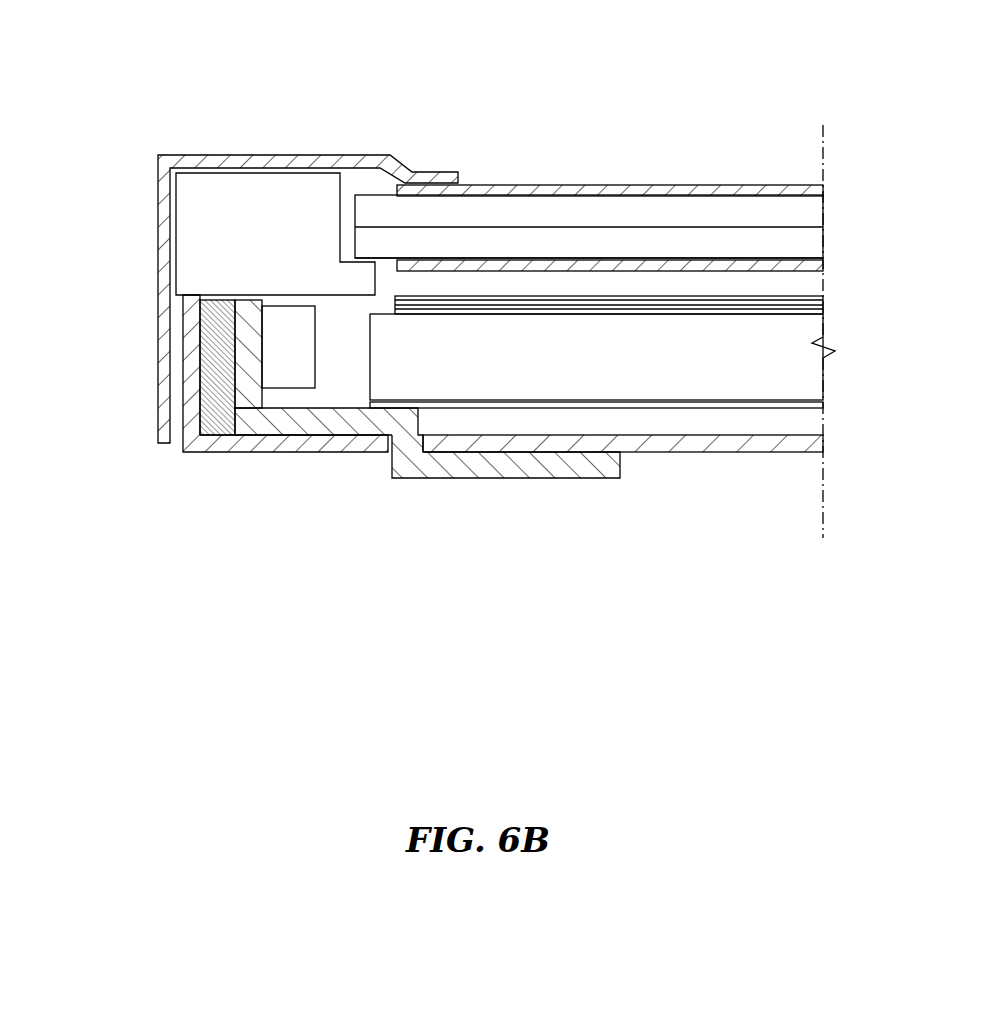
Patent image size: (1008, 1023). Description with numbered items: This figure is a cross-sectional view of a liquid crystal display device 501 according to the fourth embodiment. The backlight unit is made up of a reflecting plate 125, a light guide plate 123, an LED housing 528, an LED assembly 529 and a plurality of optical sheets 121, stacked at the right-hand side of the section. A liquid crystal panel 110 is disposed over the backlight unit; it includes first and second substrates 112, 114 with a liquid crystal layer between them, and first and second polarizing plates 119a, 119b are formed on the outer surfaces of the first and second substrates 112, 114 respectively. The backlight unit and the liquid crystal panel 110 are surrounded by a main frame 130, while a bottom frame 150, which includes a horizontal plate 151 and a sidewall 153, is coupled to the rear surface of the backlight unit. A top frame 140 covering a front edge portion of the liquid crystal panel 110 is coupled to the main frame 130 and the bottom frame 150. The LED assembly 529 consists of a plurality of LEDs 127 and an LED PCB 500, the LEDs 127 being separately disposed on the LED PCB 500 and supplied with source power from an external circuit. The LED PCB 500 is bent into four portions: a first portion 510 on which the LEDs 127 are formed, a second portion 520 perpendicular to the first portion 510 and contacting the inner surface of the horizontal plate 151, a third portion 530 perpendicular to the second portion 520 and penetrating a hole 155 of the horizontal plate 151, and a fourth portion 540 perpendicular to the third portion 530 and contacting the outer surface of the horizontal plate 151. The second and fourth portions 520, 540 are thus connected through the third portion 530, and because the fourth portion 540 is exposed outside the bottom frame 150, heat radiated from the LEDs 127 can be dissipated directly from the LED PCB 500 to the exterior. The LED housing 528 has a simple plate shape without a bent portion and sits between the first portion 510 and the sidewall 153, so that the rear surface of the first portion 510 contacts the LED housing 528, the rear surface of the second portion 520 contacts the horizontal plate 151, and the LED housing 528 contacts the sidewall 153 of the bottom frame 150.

The display device 501 is at (478, 29).
The top frame 140 is at (257, 158).
The main frame 130 is at (195, 236).
The liquid crystal panel 110 is at (589, 164).
The second substrate 114 is at (502, 210).
The first substrate 112 is at (548, 250).
The second polarizing plate 119b is at (633, 192).
The first polarizing plate 119a is at (692, 262).
The optical sheets 121 is at (823, 306).
The light guide plate 123 is at (810, 378).
The reflecting plate 125 is at (812, 407).
The LEDs 127 is at (298, 343).
The bottom frame 150 is at (243, 446).
The horizontal plate 151 is at (238, 445).
The sidewall 153 is at (188, 412).
The hole 155 is at (387, 462).
The LED PCB 500 is at (529, 471).
The first portion 510 is at (252, 362).
The second portion 520 is at (327, 423).
The third portion 530 is at (428, 465).
The fourth portion 540 is at (470, 465).
The LED housing 528 is at (218, 340).
The LED assembly 529 is at (529, 486).